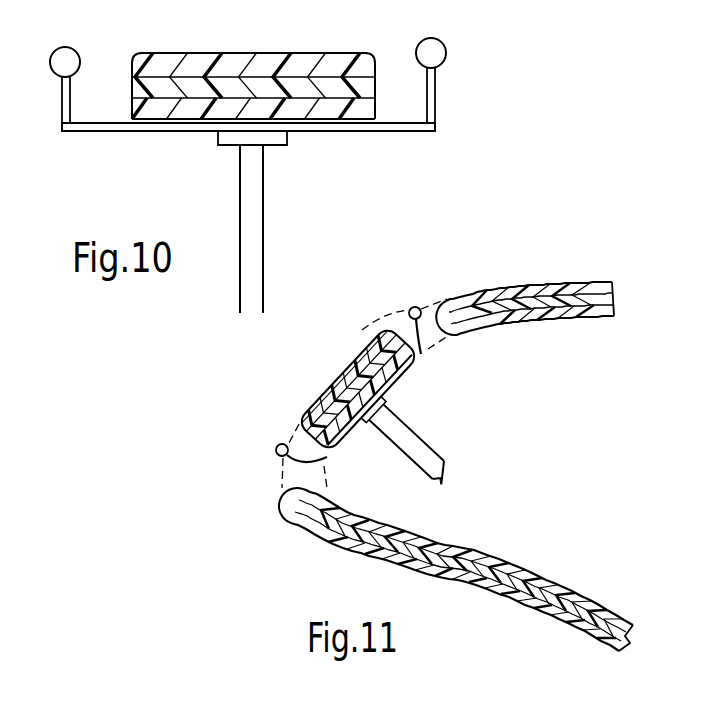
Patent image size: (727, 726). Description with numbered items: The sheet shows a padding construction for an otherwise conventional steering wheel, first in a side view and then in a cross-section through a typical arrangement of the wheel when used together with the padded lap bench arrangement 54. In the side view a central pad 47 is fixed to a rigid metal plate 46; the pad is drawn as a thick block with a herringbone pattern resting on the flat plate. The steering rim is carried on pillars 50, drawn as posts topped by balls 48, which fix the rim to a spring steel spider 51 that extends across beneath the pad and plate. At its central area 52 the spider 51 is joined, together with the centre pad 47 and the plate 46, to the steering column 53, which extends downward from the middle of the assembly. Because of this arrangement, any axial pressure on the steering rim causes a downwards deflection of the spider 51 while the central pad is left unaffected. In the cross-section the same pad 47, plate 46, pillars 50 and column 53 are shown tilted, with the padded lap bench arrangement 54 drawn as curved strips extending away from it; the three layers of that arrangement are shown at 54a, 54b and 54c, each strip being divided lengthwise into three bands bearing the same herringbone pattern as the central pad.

In FIG. 10, the metal plate 46 is at (315, 50).
In FIG. 11, the metal plate 46 is at (371, 340).
In FIG. 10, the central pad 47 is at (375, 115).
In FIG. 10, the ball 48 is at (447, 47).
In FIG. 11, the ball 48 is at (417, 306).
In FIG. 10, the pillars 50 is at (437, 91).
In FIG. 11, the pillars 50 is at (354, 390).
In FIG. 10, the spring steel spider 51 is at (413, 133).
In FIG. 11, the spring steel spider 51 is at (369, 400).
In FIG. 10, the central area 52 is at (215, 135).
In FIG. 11, the central area 52 is at (373, 410).
In FIG. 10, the steering column 53 is at (240, 232).
In FIG. 11, the steering column 53 is at (415, 438).
In FIG. 11, the padded lap bench arrangement 54 is at (531, 329).
In FIG. 11, the first layer 54a is at (533, 284).
In FIG. 11, the second layer 54b is at (588, 277).
In FIG. 11, the third layer 54c is at (572, 323).